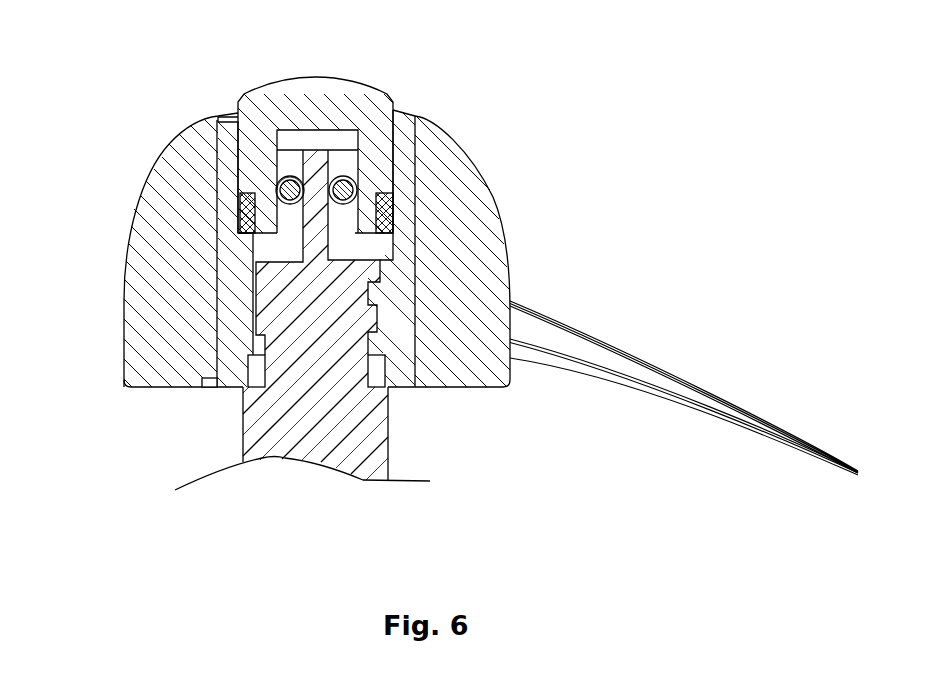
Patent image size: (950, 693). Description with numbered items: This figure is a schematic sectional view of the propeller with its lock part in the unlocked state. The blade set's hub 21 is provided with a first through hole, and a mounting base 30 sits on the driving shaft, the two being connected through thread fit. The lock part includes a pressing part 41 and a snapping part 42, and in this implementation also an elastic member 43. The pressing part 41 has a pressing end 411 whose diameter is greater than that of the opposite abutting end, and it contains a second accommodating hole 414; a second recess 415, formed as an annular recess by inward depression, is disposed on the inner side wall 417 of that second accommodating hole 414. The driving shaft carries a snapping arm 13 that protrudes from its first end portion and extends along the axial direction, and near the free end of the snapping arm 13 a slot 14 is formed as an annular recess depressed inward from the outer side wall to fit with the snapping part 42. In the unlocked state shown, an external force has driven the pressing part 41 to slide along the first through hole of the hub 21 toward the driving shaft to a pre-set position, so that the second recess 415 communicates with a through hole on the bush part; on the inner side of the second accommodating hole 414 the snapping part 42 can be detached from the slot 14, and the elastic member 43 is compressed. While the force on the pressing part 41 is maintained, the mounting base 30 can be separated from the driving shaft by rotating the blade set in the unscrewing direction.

The snapping arm 13 is at (317, 233).
The slot 14 is at (357, 150).
The hub 21 is at (124, 289).
The mounting base 30 is at (243, 382).
The pressing part 41 is at (346, 123).
The snapping part 42 is at (350, 174).
The elastic member 43 is at (393, 210).
The pressing end 411 is at (307, 75).
The second accommodating hole 414 is at (305, 132).
The second recess 415 is at (217, 152).
The inner side wall 417 is at (283, 196).